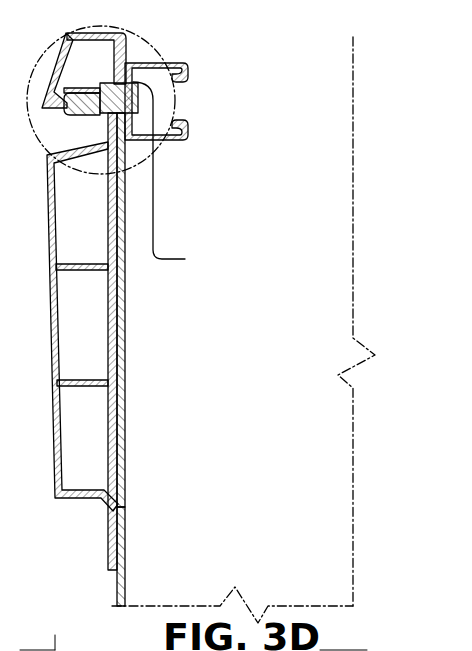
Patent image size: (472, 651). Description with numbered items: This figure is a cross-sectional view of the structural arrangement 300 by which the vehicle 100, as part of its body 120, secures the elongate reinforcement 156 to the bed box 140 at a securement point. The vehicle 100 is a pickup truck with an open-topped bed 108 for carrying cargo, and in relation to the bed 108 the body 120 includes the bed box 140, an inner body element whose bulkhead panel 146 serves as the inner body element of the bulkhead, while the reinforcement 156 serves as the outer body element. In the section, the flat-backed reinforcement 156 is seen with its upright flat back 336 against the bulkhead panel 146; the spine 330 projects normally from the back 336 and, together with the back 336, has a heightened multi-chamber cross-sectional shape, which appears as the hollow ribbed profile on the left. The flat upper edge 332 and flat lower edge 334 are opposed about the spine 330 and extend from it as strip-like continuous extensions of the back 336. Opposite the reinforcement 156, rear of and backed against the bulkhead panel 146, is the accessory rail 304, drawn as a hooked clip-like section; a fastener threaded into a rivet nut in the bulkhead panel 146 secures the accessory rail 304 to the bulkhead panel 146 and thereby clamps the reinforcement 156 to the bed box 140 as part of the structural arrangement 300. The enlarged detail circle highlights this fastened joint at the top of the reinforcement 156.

The bulkhead panel 146 is at (130, 38).
The structural arrangement 300 is at (122, 56).
The accessory rail 304 is at (175, 69).
The vehicle 100 is at (357, 103).
The bed 108 is at (357, 131).
The body 120 is at (357, 158).
The bed box 140 is at (354, 193).
The upper edge 332 is at (179, 177).
The reinforcement 156 is at (121, 285).
The spine 330 is at (53, 314).
The back 336 is at (117, 341).
The lower edge 334 is at (123, 555).